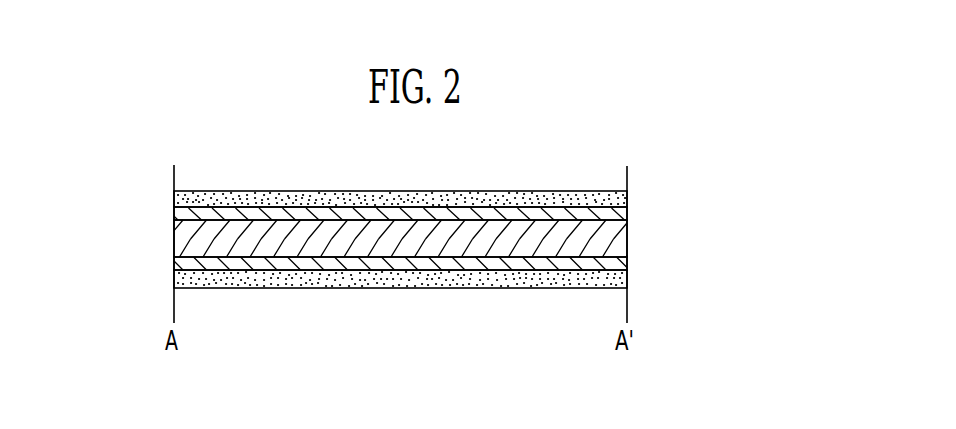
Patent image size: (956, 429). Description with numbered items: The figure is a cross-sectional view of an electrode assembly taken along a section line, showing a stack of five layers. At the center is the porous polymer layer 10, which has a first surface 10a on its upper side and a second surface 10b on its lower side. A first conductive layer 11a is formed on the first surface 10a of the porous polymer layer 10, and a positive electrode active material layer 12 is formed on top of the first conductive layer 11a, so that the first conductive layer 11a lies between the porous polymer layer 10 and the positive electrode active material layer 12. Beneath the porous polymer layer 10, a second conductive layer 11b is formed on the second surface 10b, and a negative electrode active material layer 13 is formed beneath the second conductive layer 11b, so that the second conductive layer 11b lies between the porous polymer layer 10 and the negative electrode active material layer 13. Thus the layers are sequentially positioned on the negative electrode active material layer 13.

The porous polymer layer 10 is at (620, 249).
The first surface 10a is at (190, 230).
The second surface 10b is at (190, 250).
The first conductive layer 11a is at (620, 213).
The second conductive layer 11b is at (620, 264).
The positive electrode active material layer 12 is at (620, 201).
The negative electrode active material layer 13 is at (620, 281).